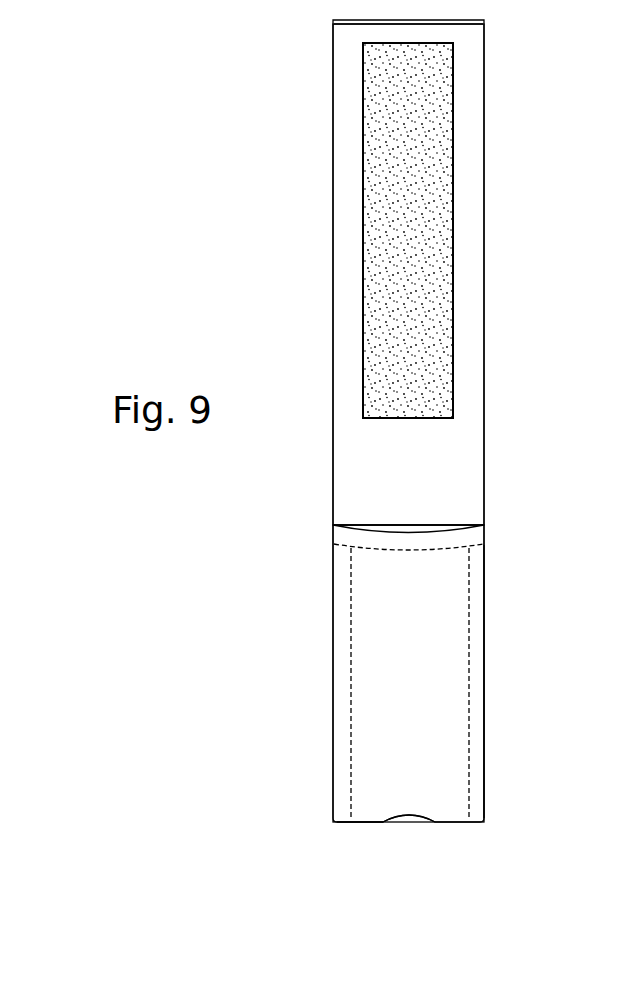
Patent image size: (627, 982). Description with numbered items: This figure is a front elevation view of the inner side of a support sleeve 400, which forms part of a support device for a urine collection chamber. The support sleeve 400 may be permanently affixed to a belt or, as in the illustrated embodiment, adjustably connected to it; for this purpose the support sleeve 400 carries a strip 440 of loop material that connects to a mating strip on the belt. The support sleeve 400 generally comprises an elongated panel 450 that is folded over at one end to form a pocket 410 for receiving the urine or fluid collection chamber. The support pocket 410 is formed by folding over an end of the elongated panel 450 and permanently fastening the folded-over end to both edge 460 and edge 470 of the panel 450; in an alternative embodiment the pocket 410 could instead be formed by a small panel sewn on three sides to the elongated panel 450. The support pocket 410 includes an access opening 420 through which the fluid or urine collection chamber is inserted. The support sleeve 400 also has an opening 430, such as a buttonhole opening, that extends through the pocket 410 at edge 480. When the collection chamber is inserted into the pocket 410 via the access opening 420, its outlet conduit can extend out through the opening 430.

The support sleeve 400 is at (304, 81).
The pocket 410 is at (548, 521).
The access opening 420 is at (405, 531).
The opening 430 is at (410, 823).
The strip of loop material 440 is at (446, 188).
The elongated panel 450 is at (476, 461).
The edge 460 is at (486, 737).
The edge 470 is at (333, 693).
The edge 480 is at (362, 823).